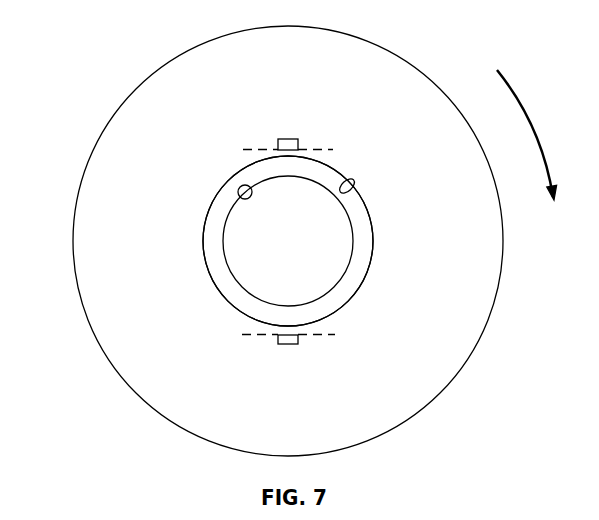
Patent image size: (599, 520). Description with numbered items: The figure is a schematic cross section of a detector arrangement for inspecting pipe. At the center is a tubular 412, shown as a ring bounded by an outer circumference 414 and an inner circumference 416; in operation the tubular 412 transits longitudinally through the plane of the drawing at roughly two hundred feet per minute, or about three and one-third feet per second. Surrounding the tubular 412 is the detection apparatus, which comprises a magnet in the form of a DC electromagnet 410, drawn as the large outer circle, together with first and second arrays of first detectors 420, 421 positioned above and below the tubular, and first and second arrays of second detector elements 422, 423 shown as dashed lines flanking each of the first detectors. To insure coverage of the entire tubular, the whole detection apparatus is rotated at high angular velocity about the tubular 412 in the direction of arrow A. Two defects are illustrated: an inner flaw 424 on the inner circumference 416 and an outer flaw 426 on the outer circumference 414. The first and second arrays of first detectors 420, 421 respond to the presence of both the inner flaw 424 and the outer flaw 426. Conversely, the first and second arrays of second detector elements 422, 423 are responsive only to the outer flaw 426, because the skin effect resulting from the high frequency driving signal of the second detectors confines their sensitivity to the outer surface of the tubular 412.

The DC electromagnet 410 is at (105, 128).
The tubular 412 is at (203, 240).
The outer circumference 414 is at (217, 196).
The inner circumference 416 is at (223, 239).
The first array of first detectors 420 is at (288, 139).
The second array of first detectors 421 is at (288, 345).
The first array of second detector elements 422 is at (243, 148).
The second array of second detector elements 423 is at (243, 336).
The inner flaw 424 is at (250, 197).
The outer flaw 426 is at (356, 184).
The arrow A is at (527, 108).